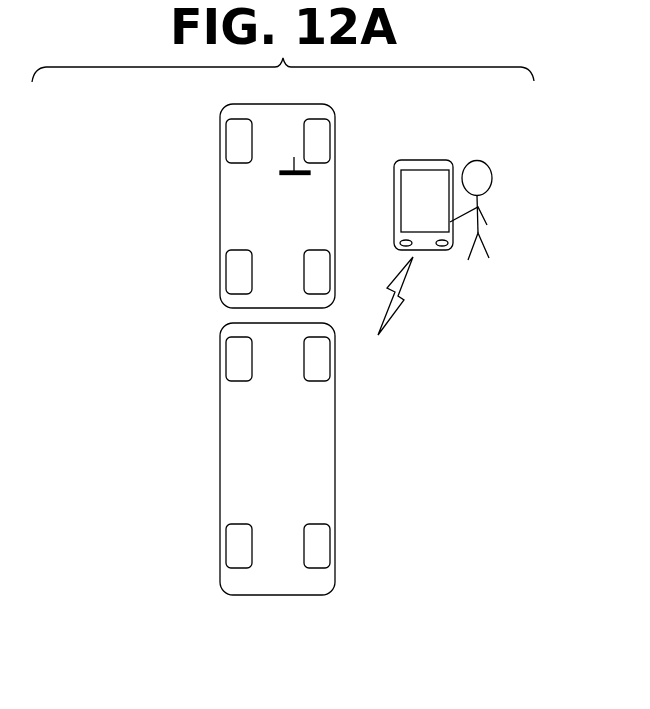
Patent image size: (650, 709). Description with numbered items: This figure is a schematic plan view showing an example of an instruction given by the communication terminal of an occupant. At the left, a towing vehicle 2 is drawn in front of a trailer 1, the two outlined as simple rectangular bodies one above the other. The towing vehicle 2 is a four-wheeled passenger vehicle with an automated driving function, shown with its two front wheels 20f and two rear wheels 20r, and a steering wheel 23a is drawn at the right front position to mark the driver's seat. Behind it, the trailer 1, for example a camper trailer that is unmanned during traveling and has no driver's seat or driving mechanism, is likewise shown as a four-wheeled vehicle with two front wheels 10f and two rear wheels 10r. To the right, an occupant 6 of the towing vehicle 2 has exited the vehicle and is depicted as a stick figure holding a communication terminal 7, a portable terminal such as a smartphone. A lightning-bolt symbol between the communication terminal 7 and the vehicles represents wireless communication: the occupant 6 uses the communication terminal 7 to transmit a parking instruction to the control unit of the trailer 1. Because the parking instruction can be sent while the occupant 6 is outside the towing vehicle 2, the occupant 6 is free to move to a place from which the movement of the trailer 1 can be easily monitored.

The trailer 1 is at (335, 447).
The towing vehicle 2 is at (220, 196).
The occupant 6 is at (485, 158).
The communication terminal 7 is at (422, 158).
The front wheels 10f is at (220, 363).
The rear wheels 10r is at (220, 549).
The front wheels 20f is at (220, 146).
The rear wheels 20r is at (220, 273).
The steering wheel 23a is at (310, 173).